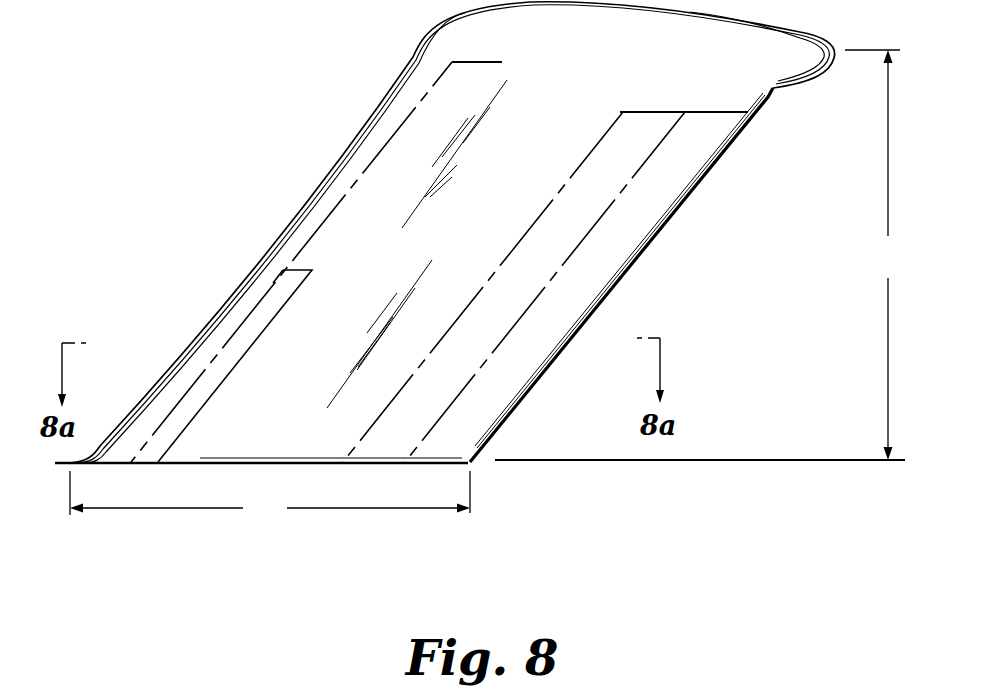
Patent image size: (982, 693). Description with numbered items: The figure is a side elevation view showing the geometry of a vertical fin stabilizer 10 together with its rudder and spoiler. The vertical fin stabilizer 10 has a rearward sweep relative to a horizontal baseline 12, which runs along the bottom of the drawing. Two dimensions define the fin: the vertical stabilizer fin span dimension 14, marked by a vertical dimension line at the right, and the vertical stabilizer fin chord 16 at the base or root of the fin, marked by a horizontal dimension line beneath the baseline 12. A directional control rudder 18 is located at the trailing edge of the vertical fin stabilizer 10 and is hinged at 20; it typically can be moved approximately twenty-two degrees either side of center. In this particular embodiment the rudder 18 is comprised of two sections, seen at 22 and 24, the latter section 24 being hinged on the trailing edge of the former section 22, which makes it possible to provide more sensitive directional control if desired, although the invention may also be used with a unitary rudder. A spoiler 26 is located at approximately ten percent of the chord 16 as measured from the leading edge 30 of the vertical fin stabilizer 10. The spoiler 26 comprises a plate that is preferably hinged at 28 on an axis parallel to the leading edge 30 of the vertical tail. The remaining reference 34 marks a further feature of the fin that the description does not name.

The vertical fin stabilizer 10 is at (500, 150).
The horizontal baseline 12 is at (712, 460).
The vertical stabilizer fin span dimension 14 is at (874, 255).
The vertical stabilizer fin chord 16 is at (270, 495).
The directional control rudder 18 is at (622, 278).
The rudder hinge 20 is at (542, 208).
The first rudder section 22 is at (617, 158).
The second rudder section 24 is at (665, 175).
The spoiler 26 is at (253, 322).
The spoiler hinge 28 is at (257, 302).
The leading edge 30 is at (283, 230).
The upper front panel 34 is at (400, 162).